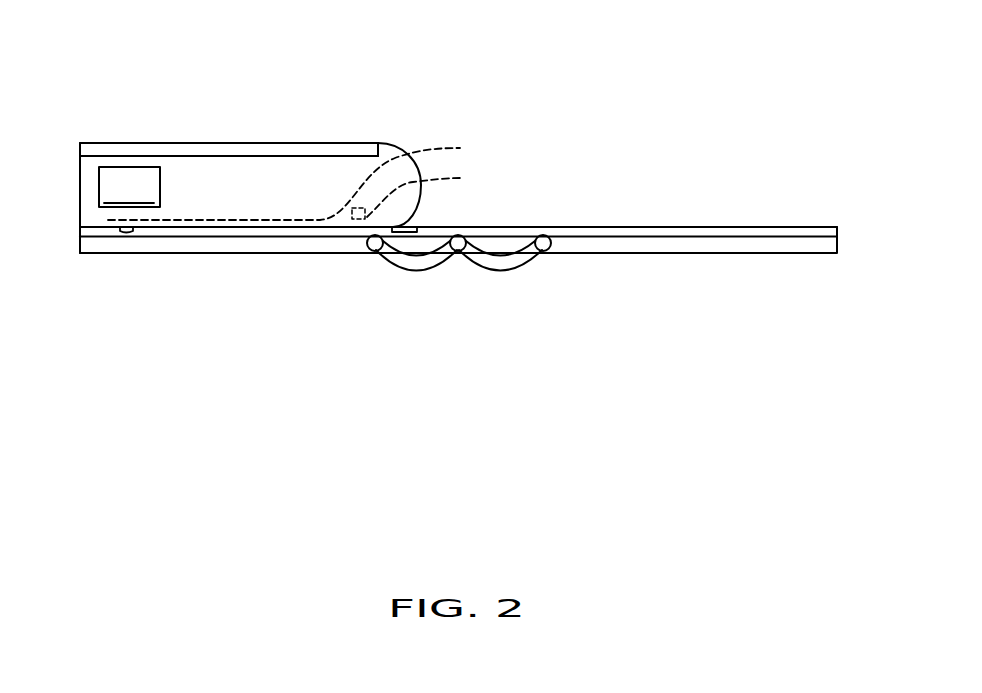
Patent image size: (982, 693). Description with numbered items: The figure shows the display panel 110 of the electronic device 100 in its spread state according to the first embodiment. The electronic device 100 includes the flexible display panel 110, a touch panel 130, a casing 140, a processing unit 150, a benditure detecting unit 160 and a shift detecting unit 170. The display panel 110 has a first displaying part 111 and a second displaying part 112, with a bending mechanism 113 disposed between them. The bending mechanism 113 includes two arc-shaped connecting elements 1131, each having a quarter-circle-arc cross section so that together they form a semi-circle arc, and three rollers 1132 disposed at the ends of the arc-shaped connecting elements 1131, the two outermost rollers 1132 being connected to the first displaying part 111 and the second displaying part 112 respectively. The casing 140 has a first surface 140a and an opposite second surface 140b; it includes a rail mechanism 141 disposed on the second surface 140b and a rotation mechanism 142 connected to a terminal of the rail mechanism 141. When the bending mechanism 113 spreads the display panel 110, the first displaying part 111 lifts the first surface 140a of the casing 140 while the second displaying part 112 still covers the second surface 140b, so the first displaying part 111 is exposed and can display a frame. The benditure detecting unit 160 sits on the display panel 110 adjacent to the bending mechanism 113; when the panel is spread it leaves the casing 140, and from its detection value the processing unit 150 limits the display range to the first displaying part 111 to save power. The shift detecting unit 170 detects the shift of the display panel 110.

The electronic device 100 is at (855, 28).
The display panel 110 is at (585, 403).
The first displaying part 111 is at (560, 230).
The second displaying part 112 is at (297, 230).
The bending mechanism 113 is at (444, 317).
The arc-shaped connecting element 1131 is at (459, 290).
The roller 1132 is at (375, 252).
The touch panel 130 is at (223, 150).
The casing 140 is at (303, 168).
The first surface 140a is at (138, 147).
The second surface 140b is at (175, 240).
The rail mechanism 141 is at (309, 175).
The rotation mechanism 142 is at (431, 189).
The processing unit 150 is at (129, 187).
The benditure detecting unit 160 is at (422, 226).
The shift detecting unit 170 is at (127, 232).